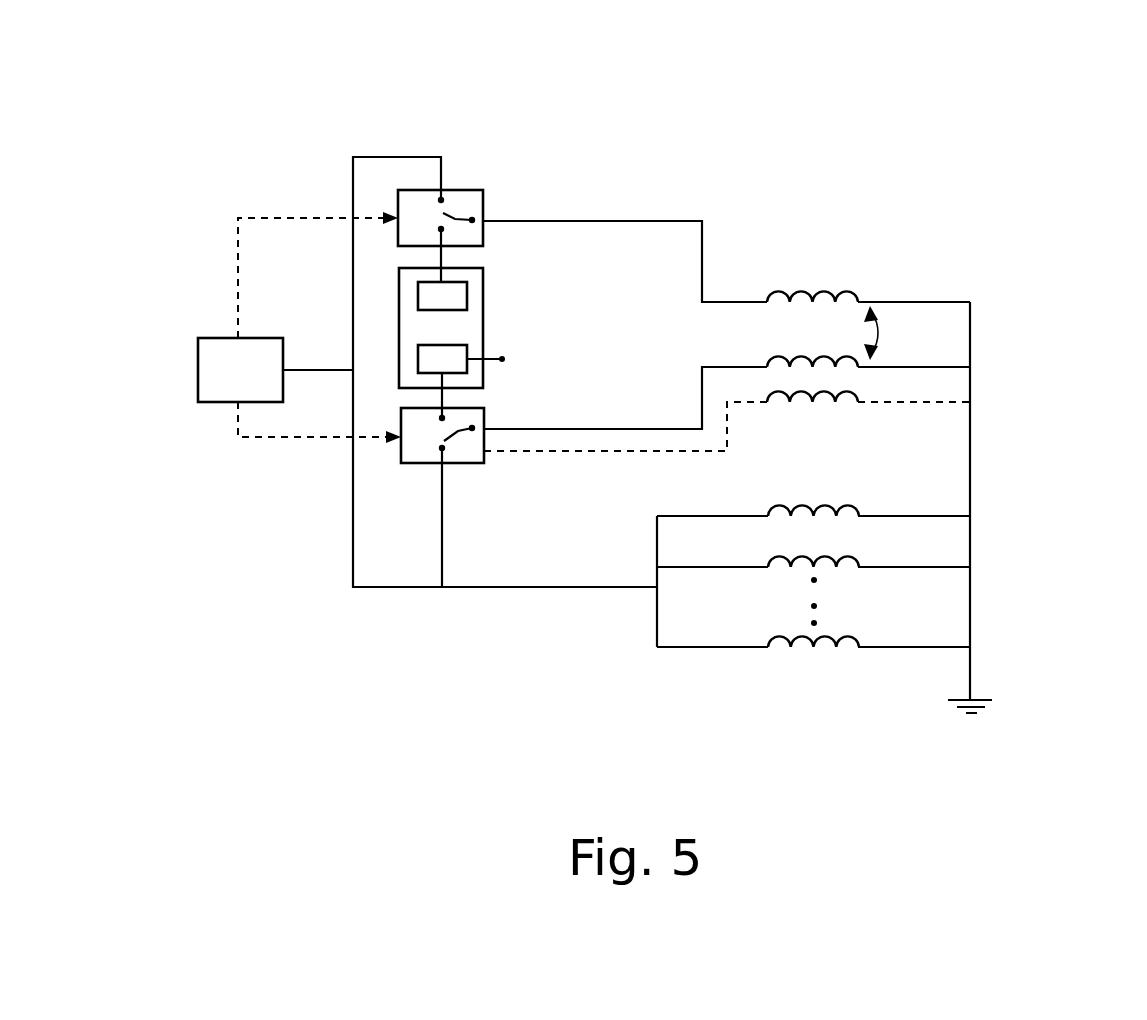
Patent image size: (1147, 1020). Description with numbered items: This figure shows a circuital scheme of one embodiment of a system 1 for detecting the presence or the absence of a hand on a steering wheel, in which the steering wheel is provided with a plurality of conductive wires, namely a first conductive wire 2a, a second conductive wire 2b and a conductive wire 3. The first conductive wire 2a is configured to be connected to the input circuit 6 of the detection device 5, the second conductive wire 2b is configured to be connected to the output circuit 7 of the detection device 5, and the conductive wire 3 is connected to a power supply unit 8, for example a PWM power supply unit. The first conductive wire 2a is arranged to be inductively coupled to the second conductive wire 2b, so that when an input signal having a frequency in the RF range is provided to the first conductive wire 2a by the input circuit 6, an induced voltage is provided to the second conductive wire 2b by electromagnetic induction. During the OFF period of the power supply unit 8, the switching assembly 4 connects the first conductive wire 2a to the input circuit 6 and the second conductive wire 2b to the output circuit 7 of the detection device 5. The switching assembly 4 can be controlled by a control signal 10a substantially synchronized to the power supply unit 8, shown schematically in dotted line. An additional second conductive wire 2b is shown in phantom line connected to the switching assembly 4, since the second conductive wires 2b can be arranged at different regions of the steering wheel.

The system 1 is at (1030, 158).
The first conductive wire 2a is at (842, 291).
The second conductive wire 2b is at (766, 361).
The conductive wire 3 is at (838, 657).
The switching assembly 4 is at (463, 190).
The detection device 5 is at (488, 289).
The input circuit 6 is at (468, 296).
The output circuit 7 is at (468, 367).
The power supply unit 8 is at (199, 370).
The control signal 10a is at (293, 440).